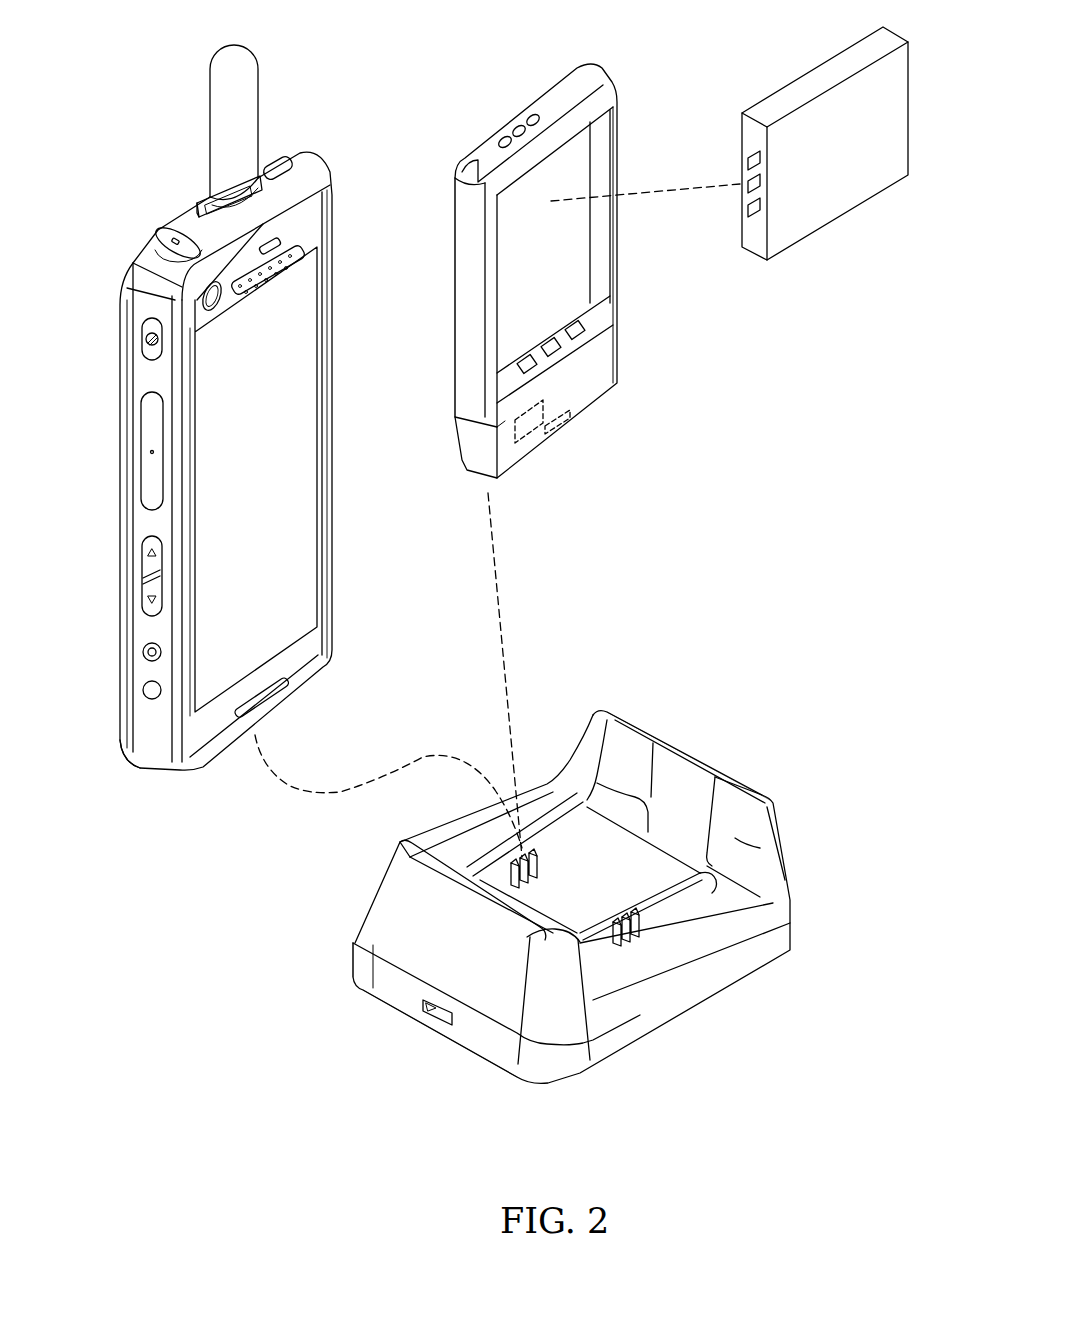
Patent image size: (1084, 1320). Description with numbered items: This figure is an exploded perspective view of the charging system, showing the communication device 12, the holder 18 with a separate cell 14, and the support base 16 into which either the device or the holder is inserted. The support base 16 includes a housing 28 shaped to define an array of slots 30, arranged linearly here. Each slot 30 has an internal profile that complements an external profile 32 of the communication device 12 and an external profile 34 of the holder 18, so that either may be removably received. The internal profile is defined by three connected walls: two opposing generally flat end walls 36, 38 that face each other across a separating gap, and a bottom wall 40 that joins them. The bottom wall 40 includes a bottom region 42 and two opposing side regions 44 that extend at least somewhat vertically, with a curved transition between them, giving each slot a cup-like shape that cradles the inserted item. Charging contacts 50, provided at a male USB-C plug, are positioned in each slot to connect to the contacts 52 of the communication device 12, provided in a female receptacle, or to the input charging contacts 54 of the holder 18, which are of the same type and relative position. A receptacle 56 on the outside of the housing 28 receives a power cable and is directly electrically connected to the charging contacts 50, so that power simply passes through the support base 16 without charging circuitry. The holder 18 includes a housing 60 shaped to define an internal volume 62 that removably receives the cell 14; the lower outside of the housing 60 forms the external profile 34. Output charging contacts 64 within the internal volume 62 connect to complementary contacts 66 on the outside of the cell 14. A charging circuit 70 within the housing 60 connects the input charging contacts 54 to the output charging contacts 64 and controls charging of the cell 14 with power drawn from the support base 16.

The communication device 12 is at (216, 456).
The cell 14 is at (796, 136).
The support base 16 is at (592, 879).
The holder 18 is at (534, 274).
The housing 28 is at (422, 955).
The slots 30 is at (640, 730).
The external profile 32 is at (166, 764).
The external profile 34 is at (444, 368).
The end wall 36 is at (597, 750).
The end wall 38 is at (643, 797).
The bottom wall 40 is at (673, 903).
The bottom region 42 is at (648, 918).
The side regions 44 is at (735, 838).
The charging contacts 50 is at (510, 870).
The contacts 52 is at (266, 703).
The input charging contacts 54 is at (565, 418).
The receptacle 56 is at (428, 1018).
The housing 60 is at (553, 92).
The internal volume 62 is at (545, 183).
The output charging contacts 64 is at (588, 327).
The contacts 66 is at (748, 212).
The charging circuit 70 is at (528, 432).